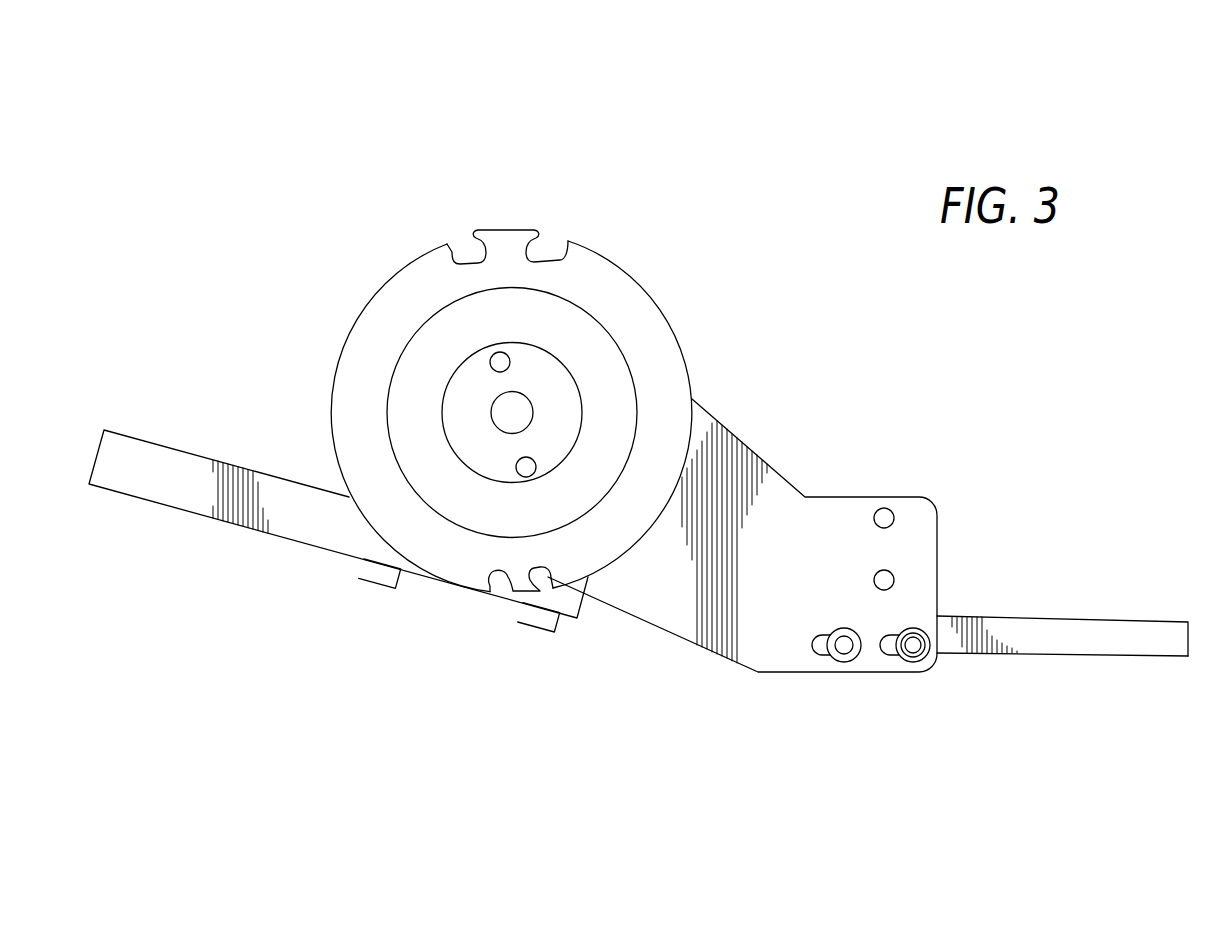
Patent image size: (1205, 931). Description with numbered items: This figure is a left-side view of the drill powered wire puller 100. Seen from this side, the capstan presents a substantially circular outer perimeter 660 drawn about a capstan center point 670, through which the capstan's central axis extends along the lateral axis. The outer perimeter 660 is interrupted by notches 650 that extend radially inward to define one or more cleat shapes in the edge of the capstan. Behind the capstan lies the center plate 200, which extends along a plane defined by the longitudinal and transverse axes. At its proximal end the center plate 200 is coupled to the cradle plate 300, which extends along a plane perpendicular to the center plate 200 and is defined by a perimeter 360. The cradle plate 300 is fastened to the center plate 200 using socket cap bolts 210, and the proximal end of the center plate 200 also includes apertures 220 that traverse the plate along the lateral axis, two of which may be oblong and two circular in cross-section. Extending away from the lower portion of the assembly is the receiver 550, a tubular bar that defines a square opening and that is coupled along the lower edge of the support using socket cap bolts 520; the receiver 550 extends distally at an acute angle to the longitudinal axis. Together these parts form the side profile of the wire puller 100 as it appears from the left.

The drill powered wire puller 100 is at (178, 176).
The center plate 200 is at (745, 468).
The socket cap bolts 210 is at (844, 648).
The apertures 220 is at (886, 510).
The cradle plate 300 is at (1076, 630).
The perimeter 360 is at (1085, 653).
The socket cap bolts 520 is at (382, 578).
The receiver 550 is at (132, 448).
The notches 650 is at (465, 247).
The outer perimeter 660 is at (641, 284).
The capstan center point 670 is at (512, 412).